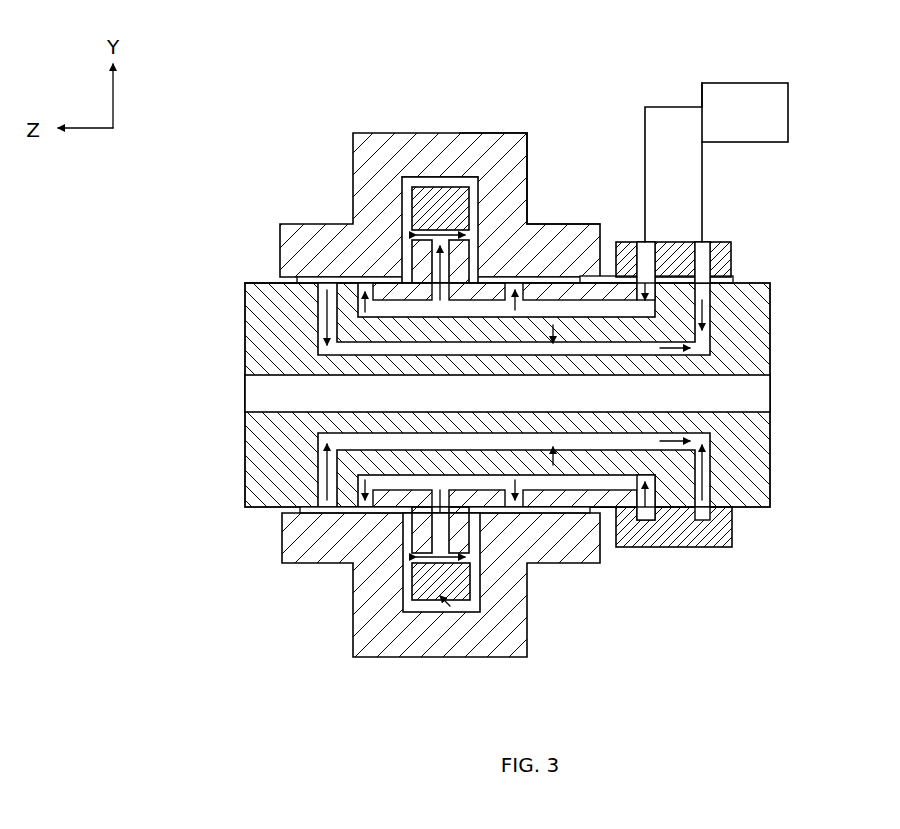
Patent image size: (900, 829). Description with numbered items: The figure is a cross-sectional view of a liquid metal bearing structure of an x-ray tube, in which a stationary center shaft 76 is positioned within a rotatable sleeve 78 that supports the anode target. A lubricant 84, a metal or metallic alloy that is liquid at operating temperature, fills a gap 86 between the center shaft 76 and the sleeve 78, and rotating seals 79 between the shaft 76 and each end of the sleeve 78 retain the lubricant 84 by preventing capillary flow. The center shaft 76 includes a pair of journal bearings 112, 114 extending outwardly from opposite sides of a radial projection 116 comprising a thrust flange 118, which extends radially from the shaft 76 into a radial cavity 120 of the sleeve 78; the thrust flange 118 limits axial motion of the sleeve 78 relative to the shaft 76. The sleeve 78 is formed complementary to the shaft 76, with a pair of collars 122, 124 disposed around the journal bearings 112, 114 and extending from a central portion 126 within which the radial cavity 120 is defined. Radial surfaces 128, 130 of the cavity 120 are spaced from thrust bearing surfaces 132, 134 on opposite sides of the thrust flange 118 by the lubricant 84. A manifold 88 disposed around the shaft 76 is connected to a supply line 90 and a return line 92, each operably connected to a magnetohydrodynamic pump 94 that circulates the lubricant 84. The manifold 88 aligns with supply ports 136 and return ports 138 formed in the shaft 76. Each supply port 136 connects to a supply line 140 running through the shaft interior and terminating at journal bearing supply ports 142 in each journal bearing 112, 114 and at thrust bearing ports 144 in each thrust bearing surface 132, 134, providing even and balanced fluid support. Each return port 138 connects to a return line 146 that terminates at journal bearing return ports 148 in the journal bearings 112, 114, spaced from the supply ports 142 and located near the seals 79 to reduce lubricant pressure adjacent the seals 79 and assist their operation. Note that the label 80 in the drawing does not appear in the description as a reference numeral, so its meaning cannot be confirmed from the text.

The center shaft 76 is at (262, 509).
The sleeve 78 is at (380, 120).
The rotating seals 79 is at (245, 283).
The air gap 80 is at (262, 393).
The lubricant 84 is at (410, 192).
The gap 86 is at (413, 183).
The manifold 88 is at (735, 277).
The supply line 90 is at (645, 122).
The return line 92 is at (705, 172).
The magnetohydrodynamic pump 94 is at (790, 112).
The journal bearing 112 is at (365, 290).
The journal bearing 114 is at (660, 462).
The radial projection 116 is at (385, 652).
The thrust flange 118 is at (455, 170).
The radial cavity 120 is at (403, 210).
The collar 122 is at (355, 270).
The collar 124 is at (565, 265).
The central portion 126 is at (520, 162).
The radial surface 128 is at (397, 250).
The radial surface 130 is at (503, 165).
The thrust bearing surface 132 is at (412, 598).
The thrust bearing surface 134 is at (470, 592).
The supply port 136 is at (735, 245).
The return port 138 is at (705, 297).
The supply line 140 is at (655, 330).
The journal bearing supply port 142 is at (350, 343).
The thrust bearing port 144 is at (432, 605).
The return line 146 is at (350, 347).
The journal bearing return port 148 is at (312, 530).